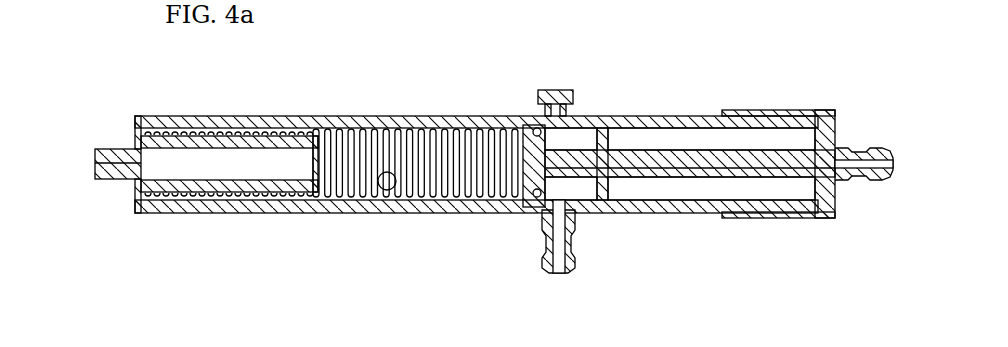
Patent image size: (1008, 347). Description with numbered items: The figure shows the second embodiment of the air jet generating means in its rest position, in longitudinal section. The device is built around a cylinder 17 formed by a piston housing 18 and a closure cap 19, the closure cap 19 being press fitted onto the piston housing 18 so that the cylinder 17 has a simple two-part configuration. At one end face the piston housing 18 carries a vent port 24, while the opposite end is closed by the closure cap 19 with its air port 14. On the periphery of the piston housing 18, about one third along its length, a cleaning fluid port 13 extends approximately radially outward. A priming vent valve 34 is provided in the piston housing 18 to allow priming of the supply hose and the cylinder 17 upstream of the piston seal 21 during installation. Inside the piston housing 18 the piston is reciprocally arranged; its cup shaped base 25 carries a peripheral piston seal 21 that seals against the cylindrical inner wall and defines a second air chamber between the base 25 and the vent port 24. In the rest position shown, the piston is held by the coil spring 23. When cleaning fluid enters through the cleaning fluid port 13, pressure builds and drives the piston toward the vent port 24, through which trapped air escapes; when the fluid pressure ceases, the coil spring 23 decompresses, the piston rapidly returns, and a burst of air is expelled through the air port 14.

The cleaning fluid port 13 is at (577, 250).
The air port 14 is at (872, 190).
The cylinder 17 is at (442, 108).
The piston housing 18 is at (250, 214).
The closure cap 19 is at (818, 220).
The piston seal 21 is at (536, 203).
The coil spring 23 is at (393, 200).
The vent port 24 is at (98, 183).
The cup shaped base 25 is at (376, 116).
The priming vent valve 34 is at (574, 87).